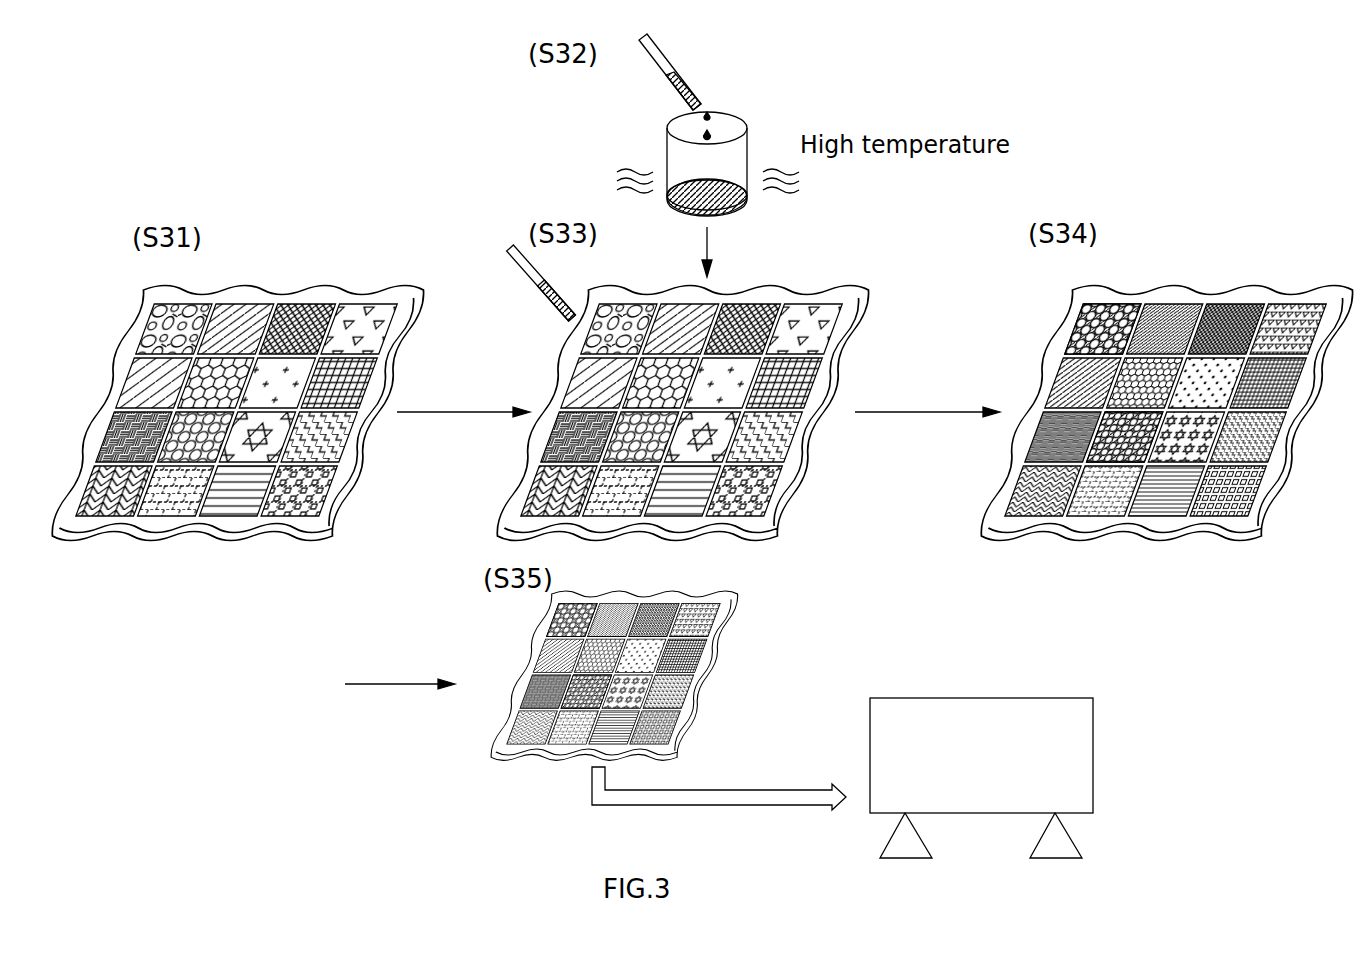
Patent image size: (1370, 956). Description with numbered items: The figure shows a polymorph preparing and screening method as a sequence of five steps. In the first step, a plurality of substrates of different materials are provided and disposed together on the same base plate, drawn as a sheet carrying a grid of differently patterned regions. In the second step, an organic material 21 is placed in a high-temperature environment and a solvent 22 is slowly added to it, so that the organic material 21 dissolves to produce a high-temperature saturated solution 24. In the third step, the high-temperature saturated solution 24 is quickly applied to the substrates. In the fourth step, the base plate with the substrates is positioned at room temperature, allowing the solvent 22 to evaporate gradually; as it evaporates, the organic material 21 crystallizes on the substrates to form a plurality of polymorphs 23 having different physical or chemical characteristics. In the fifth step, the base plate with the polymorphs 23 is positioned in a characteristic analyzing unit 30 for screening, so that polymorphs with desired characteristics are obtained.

The organic material 21 is at (740, 202).
The solvent 22 is at (705, 112).
The polymorphs 23 is at (1305, 368).
The high-temperature saturated solution 24 is at (537, 287).
The characteristic analyzing unit 30 is at (1093, 740).